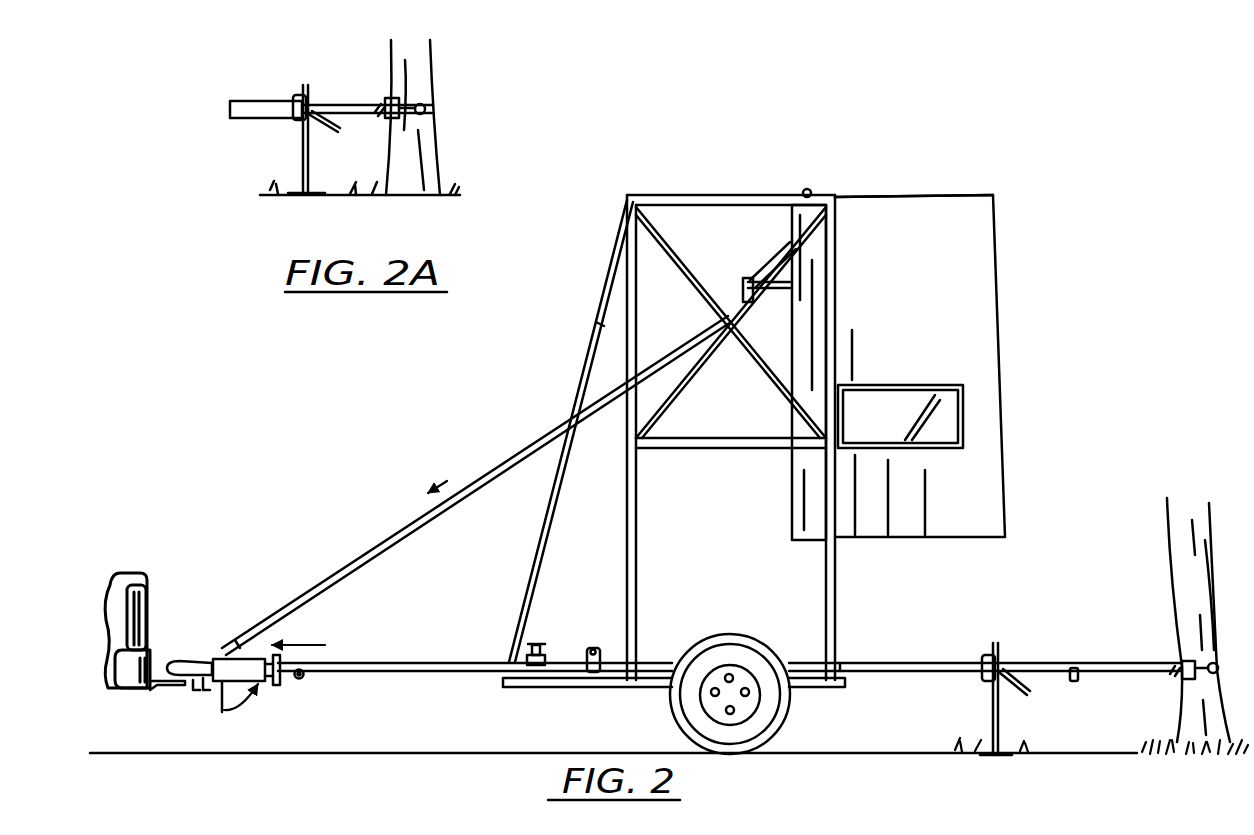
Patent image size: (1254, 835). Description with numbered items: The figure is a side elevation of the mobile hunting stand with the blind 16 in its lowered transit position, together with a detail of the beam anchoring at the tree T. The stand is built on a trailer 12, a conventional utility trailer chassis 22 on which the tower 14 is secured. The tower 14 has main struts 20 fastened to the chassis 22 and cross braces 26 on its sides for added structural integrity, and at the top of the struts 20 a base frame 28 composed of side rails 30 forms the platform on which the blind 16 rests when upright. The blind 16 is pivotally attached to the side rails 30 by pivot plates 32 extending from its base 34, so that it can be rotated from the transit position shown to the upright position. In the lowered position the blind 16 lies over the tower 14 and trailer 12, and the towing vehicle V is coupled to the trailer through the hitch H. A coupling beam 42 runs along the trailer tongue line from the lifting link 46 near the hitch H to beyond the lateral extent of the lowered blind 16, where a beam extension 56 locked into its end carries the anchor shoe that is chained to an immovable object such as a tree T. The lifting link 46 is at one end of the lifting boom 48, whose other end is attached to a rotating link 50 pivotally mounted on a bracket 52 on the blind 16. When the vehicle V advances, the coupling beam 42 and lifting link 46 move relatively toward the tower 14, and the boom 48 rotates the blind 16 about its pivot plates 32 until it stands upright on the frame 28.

In FIG. 2, the trailer 12 is at (558, 725).
In FIG. 2, the tower 14 is at (673, 379).
In FIG. 2, the blind 16 is at (981, 332).
In FIG. 2, the main struts 20 is at (632, 562).
In FIG. 2, the chassis 22 is at (608, 685).
In FIG. 2, the cross braces 26 is at (672, 268).
In FIG. 2, the base frame 28 is at (673, 379).
In FIG. 2, the side rails 30 is at (692, 190).
In FIG. 2, the pivot plates 32 is at (808, 193).
In FIG. 2, the base 34 is at (903, 197).
In FIG. 2A, the coupling beam 42 is at (257, 103).
In FIG. 2, the coupling beam 42 is at (372, 660).
In FIG. 2, the lifting link 46 is at (238, 645).
In FIG. 2, the lifting boom 48 is at (360, 555).
In FIG. 2, the rotating link 50 is at (735, 290).
In FIG. 2, the bracket 52 is at (768, 248).
In FIG. 2A, the beam extension 56 is at (335, 107).
In FIG. 2, the beam extension 56 is at (1025, 660).
In FIG. 2, the hitch H is at (171, 690).
In FIG. 2, the vehicle V is at (134, 570).
In FIG. 2A, the tree T is at (425, 70).
In FIG. 2, the tree T is at (1195, 626).